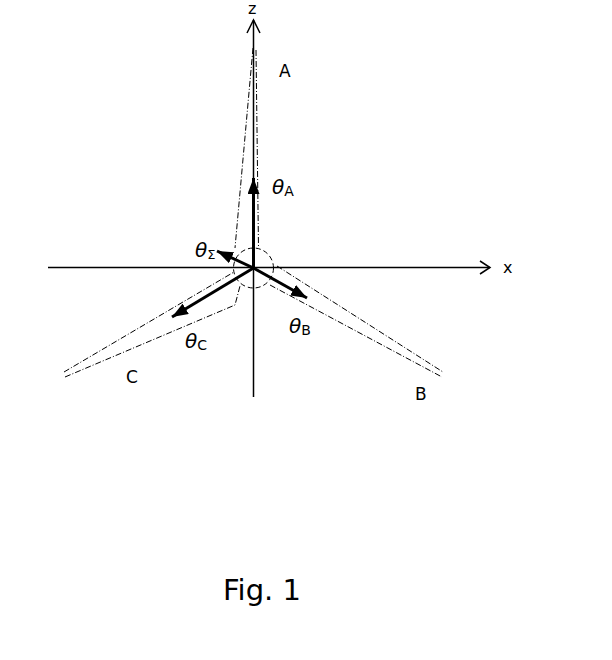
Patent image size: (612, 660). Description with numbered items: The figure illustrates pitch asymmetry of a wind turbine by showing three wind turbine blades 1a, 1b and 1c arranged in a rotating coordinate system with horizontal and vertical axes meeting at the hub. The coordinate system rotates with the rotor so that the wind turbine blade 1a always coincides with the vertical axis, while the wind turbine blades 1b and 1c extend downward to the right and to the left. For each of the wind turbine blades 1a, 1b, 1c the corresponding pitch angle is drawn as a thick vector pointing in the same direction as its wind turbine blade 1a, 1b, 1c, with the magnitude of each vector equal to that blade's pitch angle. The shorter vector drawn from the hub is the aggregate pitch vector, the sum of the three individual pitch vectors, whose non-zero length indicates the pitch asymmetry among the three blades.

The wind turbine blade 1a is at (251, 152).
The wind turbine blade 1b is at (347, 318).
The wind turbine blade 1c is at (145, 330).